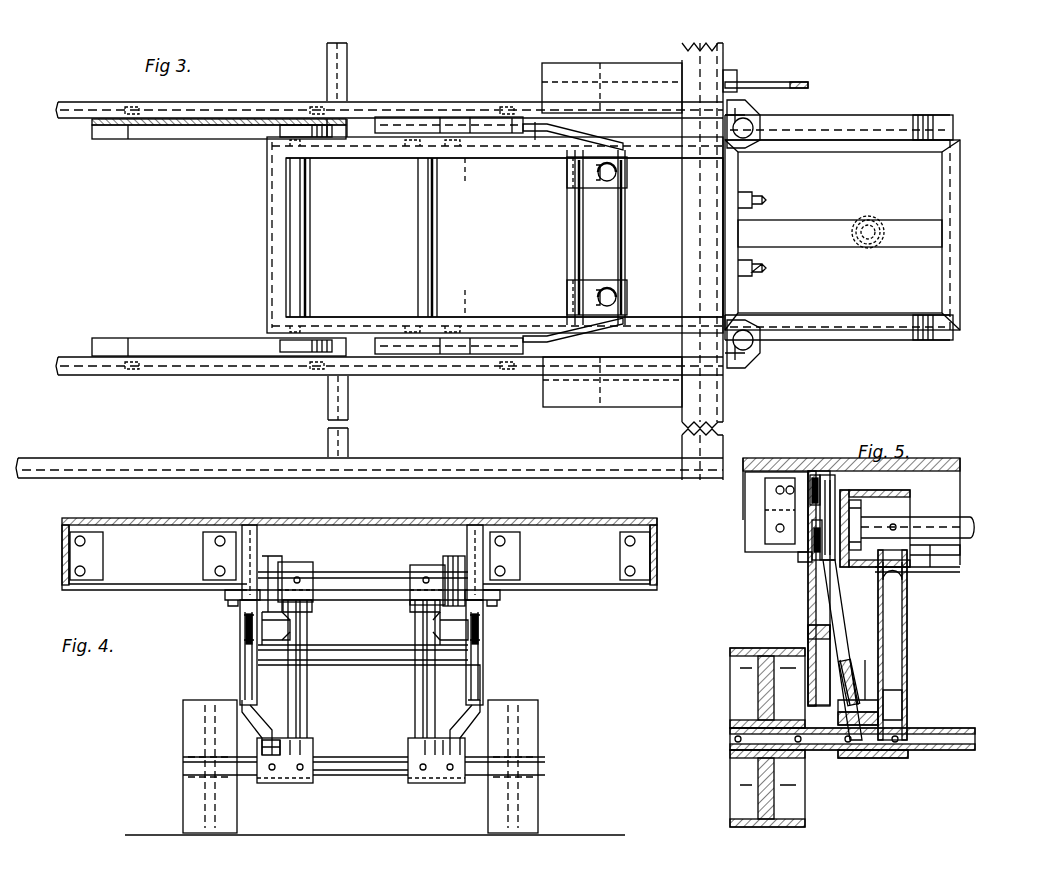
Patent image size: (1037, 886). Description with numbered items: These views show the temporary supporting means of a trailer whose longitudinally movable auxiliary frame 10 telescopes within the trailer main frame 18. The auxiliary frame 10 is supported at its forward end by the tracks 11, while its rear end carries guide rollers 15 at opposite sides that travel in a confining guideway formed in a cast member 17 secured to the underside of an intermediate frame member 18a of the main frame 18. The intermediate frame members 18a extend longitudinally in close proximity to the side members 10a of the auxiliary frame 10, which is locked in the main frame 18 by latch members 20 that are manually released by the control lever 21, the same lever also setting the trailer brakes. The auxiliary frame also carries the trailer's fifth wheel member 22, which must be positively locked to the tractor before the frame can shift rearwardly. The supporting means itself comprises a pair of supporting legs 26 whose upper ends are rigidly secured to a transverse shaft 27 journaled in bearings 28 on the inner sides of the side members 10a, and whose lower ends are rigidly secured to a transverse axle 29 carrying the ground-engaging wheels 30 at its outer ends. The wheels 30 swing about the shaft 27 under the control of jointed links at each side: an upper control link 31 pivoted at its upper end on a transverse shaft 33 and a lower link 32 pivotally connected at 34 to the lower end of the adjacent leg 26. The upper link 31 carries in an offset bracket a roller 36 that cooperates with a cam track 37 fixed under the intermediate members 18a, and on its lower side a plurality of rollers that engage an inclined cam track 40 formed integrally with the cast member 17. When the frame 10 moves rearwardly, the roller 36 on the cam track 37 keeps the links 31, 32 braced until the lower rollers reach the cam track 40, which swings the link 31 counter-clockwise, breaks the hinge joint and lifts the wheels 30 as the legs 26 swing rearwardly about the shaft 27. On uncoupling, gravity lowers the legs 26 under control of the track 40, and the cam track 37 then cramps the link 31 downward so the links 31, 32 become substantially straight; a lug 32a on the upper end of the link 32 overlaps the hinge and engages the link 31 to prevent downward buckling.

In FIG. 3, the auxiliary frame 10 is at (355, 317).
In FIG. 4, the auxiliary frame 10 is at (375, 643).
In FIG. 5, the auxiliary frame 10 is at (940, 510).
In FIG. 3, the side members 10a is at (386, 188).
In FIG. 4, the side members 10a is at (273, 556).
In FIG. 5, the side members 10a is at (858, 492).
In FIG. 3, the tracks 11 is at (828, 123).
In FIG. 3, the guide rollers 15 is at (282, 133).
In FIG. 4, the guide rollers 15 is at (465, 556).
In FIG. 3, the cast member 17 is at (215, 139).
In FIG. 4, the cast member 17 is at (250, 540).
In FIG. 5, the cast member 17 is at (810, 585).
In FIG. 3, the trailer main frame 18 is at (193, 470).
In FIG. 4, the trailer main frame 18 is at (63, 588).
In FIG. 5, the trailer main frame 18 is at (757, 540).
In FIG. 3, the intermediate frame member 18a is at (360, 100).
In FIG. 4, the intermediate frame member 18a is at (240, 558).
In FIG. 3, the latch members 20 is at (750, 120).
In FIG. 3, the control lever 21 is at (762, 81).
In FIG. 3, the fifth wheel member 22 is at (862, 287).
In FIG. 3, the supporting legs 26 is at (600, 294).
In FIG. 4, the supporting legs 26 is at (412, 681).
In FIG. 5, the supporting legs 26 is at (908, 618).
In FIG. 3, the transverse shaft 27 is at (572, 226).
In FIG. 4, the transverse shaft 27 is at (352, 588).
In FIG. 5, the transverse shaft 27 is at (948, 568).
In FIG. 3, the bearings 28 is at (562, 300).
In FIG. 4, the bearings 28 is at (445, 578).
In FIG. 5, the bearings 28 is at (862, 512).
In FIG. 3, the transverse axle 29 is at (628, 265).
In FIG. 4, the transverse axle 29 is at (342, 765).
In FIG. 5, the transverse axle 29 is at (928, 728).
In FIG. 3, the ground-engaging wheels 30 is at (572, 72).
In FIG. 4, the ground-engaging wheels 30 is at (188, 727).
In FIG. 5, the ground-engaging wheels 30 is at (740, 693).
In FIG. 3, the upper control link 31 is at (465, 190).
In FIG. 4, the upper control link 31 is at (243, 645).
In FIG. 5, the upper control link 31 is at (833, 478).
In FIG. 3, the lower control link 32 is at (540, 135).
In FIG. 4, the lower control link 32 is at (255, 718).
In FIG. 5, the lower control link 32 is at (828, 590).
In FIG. 4, the lug 32a is at (485, 668).
In FIG. 5, the lug 32a is at (815, 540).
In FIG. 3, the transverse shaft 33 is at (437, 250).
In FIG. 4, the pivotal connection 34 is at (262, 748).
In FIG. 5, the pivotal connection 34 is at (865, 658).
In FIG. 4, the roller 36 is at (243, 628).
In FIG. 5, the roller 36 is at (818, 475).
In FIG. 3, the cam track 37 is at (400, 130).
In FIG. 4, the cam track 37 is at (247, 602).
In FIG. 5, the inclined cam track 40 is at (808, 632).